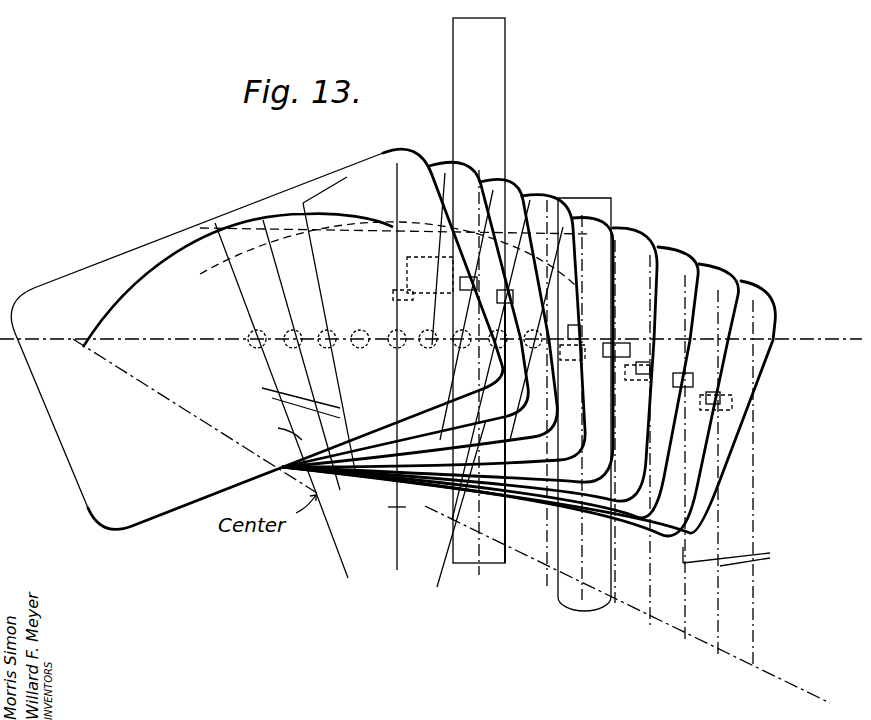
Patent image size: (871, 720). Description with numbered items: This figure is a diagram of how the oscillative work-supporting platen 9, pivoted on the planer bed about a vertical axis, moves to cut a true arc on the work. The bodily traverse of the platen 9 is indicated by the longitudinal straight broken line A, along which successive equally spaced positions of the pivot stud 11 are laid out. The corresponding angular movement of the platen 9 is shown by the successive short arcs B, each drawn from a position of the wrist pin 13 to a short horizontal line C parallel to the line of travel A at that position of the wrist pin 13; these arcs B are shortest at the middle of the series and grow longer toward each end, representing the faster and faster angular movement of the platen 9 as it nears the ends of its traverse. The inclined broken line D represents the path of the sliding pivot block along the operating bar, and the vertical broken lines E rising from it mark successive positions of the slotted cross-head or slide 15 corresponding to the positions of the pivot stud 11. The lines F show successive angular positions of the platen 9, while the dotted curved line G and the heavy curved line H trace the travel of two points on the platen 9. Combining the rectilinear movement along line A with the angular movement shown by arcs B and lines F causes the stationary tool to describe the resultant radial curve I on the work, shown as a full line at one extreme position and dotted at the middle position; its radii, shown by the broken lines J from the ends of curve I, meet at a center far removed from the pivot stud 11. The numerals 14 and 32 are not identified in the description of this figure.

The platen 9 is at (393, 342).
The pivot stud 11 is at (250, 333).
The wrist pin 13 is at (362, 346).
The index mark 14 is at (405, 262).
The slotted cross-head or slide 15 is at (505, 137).
The finger 32 is at (558, 592).
The line of bodily traverse movement A is at (849, 343).
The short arcs B is at (522, 297).
The short horizontal lines C is at (575, 322).
The inclined broken line D is at (743, 660).
The vertical broken lines E is at (740, 559).
The lines indicating angular positions of the platen F is at (440, 568).
The dotted curved line G is at (528, 196).
The heavy curved line H is at (282, 426).
The resultant arc or radial curve I is at (176, 254).
The broken radius lines J is at (168, 394).